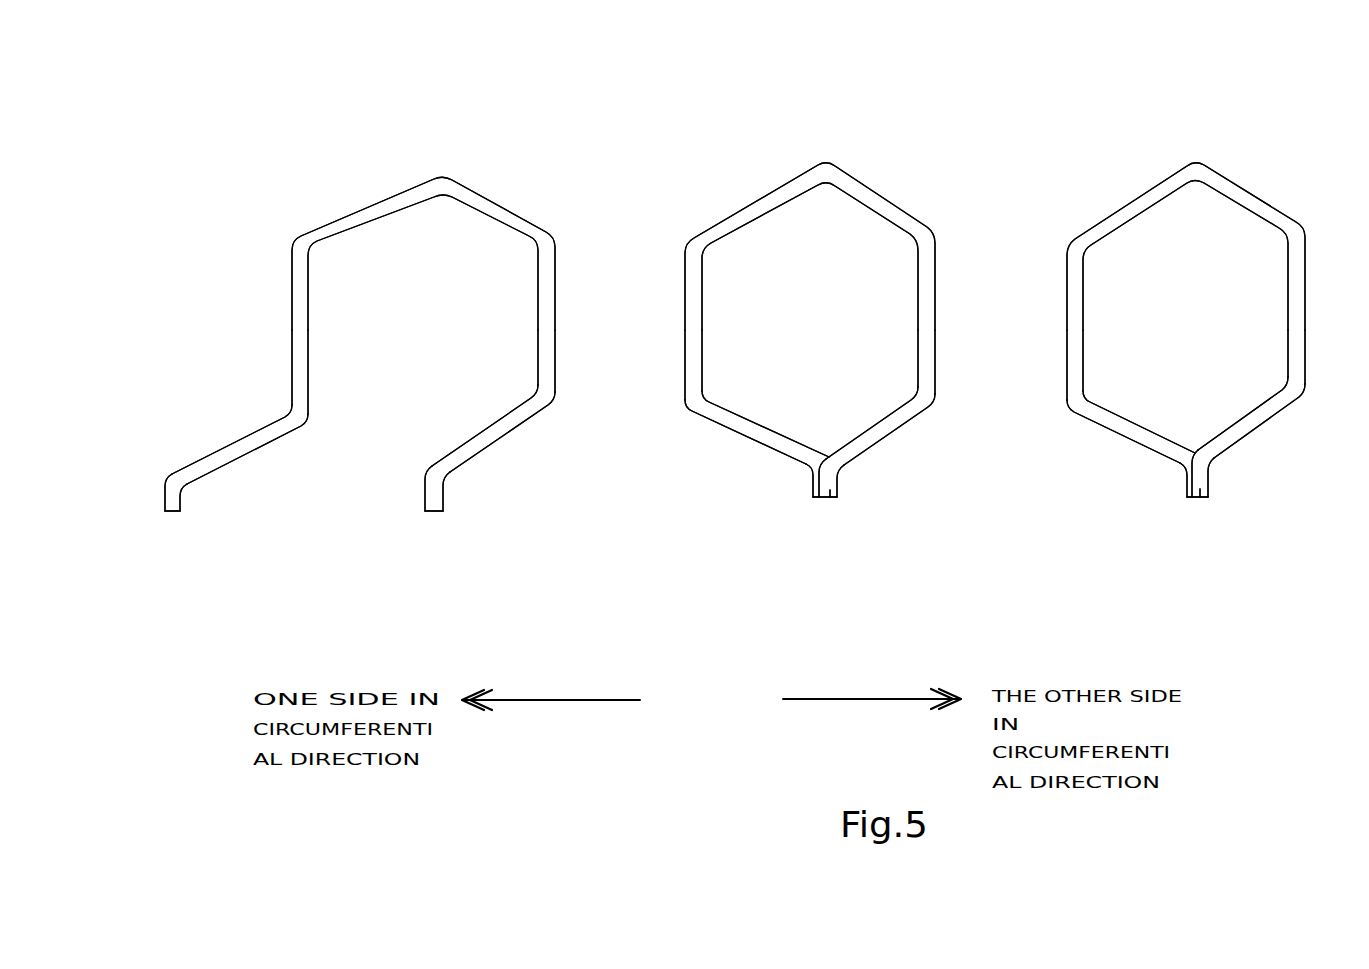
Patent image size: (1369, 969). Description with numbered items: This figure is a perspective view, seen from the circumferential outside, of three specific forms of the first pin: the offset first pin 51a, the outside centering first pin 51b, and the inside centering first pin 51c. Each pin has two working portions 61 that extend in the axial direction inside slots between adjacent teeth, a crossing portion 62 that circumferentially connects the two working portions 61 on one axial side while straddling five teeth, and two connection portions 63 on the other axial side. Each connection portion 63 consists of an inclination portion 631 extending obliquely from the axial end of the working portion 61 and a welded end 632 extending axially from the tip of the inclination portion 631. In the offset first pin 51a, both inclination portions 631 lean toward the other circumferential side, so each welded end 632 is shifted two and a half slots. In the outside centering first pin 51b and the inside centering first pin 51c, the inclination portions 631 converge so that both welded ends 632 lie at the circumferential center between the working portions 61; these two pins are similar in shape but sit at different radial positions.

The offset first pin 51a is at (500, 132).
The outside centering first pin 51b is at (888, 137).
The inside centering first pin 51c is at (1260, 132).
The working portion 61 is at (798, 264).
The crossing portion 62 is at (363, 218).
The connection portion 63 is at (735, 504).
The inclination portion 631 is at (227, 457).
The welded end 632 is at (172, 510).